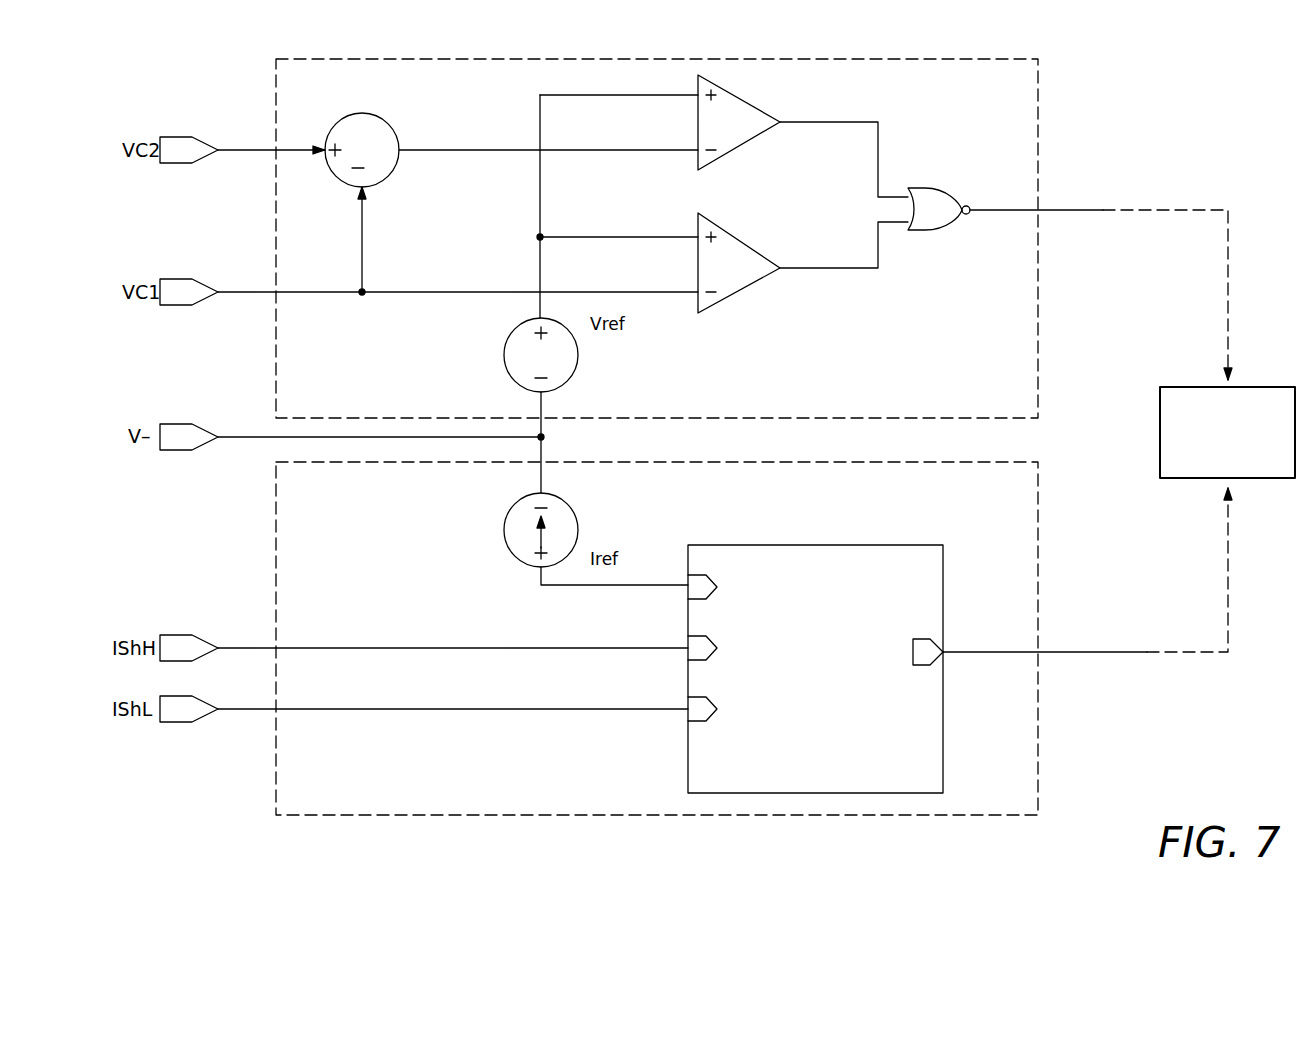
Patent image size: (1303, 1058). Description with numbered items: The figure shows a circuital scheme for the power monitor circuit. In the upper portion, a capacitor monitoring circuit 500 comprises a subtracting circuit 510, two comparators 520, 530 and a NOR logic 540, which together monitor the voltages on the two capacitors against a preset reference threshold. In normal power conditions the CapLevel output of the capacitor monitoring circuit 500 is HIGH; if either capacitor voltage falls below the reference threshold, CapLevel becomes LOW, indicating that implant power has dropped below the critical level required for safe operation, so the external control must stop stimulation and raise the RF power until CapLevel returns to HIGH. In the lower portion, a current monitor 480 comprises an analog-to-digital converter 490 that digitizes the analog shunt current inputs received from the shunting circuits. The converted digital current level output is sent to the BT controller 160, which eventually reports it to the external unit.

The capacitor monitoring circuit 500 is at (1038, 305).
The subtracting circuit 510 is at (388, 123).
The comparator 520 is at (748, 150).
The comparator 530 is at (755, 284).
The NOR logic 540 is at (940, 230).
The current monitor 480 is at (1038, 738).
The analog-to-digital converter 490 is at (805, 545).
The BT controller 160 is at (1227, 432).